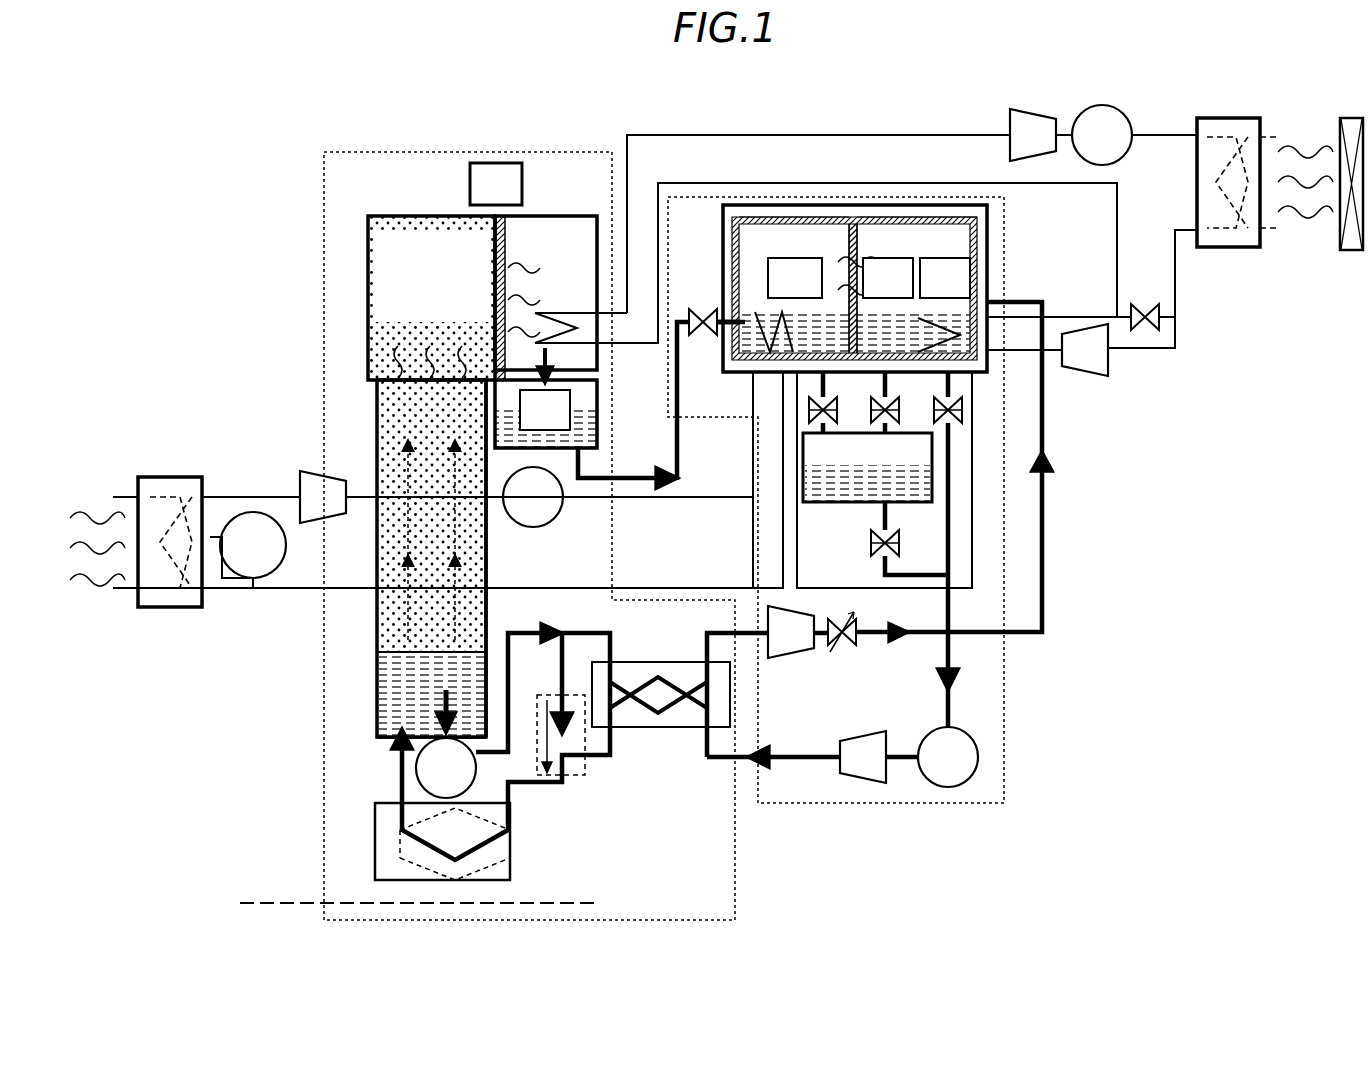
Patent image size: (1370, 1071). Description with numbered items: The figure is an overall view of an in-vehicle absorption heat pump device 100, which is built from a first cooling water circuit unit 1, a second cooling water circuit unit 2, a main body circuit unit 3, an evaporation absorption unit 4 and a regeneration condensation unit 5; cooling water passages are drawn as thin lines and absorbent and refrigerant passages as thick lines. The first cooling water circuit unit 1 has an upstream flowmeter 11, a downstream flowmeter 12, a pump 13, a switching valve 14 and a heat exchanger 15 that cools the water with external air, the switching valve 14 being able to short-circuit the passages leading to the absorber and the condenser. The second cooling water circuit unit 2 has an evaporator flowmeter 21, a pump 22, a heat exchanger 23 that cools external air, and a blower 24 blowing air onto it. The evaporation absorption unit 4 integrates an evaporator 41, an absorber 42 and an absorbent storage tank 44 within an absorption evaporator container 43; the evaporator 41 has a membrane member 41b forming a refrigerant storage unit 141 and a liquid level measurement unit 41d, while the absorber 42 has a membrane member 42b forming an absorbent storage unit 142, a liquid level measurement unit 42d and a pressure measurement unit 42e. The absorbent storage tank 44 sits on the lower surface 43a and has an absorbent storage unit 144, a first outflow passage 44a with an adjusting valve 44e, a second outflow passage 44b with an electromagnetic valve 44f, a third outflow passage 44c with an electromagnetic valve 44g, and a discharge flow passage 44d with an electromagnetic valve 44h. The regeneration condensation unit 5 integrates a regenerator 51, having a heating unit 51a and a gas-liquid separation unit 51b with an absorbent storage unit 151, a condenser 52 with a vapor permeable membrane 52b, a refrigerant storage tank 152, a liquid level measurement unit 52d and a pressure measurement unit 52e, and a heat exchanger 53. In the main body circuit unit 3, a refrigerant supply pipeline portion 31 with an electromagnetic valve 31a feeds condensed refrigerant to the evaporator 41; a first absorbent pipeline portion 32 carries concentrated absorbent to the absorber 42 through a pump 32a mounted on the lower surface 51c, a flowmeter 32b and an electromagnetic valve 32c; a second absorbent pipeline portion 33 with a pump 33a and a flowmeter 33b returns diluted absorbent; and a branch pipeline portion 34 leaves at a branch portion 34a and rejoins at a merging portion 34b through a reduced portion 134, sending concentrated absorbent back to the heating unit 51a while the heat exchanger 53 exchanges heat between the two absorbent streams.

The in-vehicle absorption heat pump device 100 is at (1280, 363).
The first cooling water circuit unit 1 is at (903, 133).
The second cooling water circuit unit 2 is at (247, 488).
The main body circuit unit 3 is at (1046, 440).
The evaporation absorption unit 4 is at (890, 195).
The regeneration condensation unit 5 is at (427, 496).
The upstream flowmeter 11 is at (1089, 371).
The downstream flowmeter 12 is at (1028, 110).
The pump 13 is at (1102, 105).
The switching valve 14 is at (1145, 303).
The heat exchanger 15 is at (1226, 118).
The evaporator flowmeter 21 is at (304, 470).
The pump 22 is at (533, 528).
The heat exchanger 23 is at (172, 477).
The blower 24 is at (244, 580).
The refrigerant supply pipeline portion 31 is at (622, 476).
The electromagnetic valve 31a is at (703, 307).
The first absorbent pipeline portion 32 is at (578, 632).
The pump 32a is at (477, 768).
The flowmeter 32b is at (779, 658).
The electromagnetic valve 32c is at (843, 647).
The second absorbent pipeline portion 33 is at (606, 758).
The pump 33a is at (965, 730).
The flowmeter 33b is at (870, 737).
The branch pipeline portion 34 is at (556, 673).
The branch portion 34a is at (553, 630).
The merging portion 34b is at (575, 778).
The evaporator 41 is at (785, 210).
The membrane member 41b is at (769, 216).
The liquid level measurement unit 41d is at (767, 265).
The absorber 42 is at (912, 213).
The membrane member 42b is at (975, 216).
The liquid level measurement unit 42d is at (866, 262).
The pressure measurement unit 42e is at (984, 262).
The absorption evaporator container 43 is at (852, 214).
The lower surface 43a is at (752, 375).
The absorbent storage tank 44 is at (907, 549).
The first outflow passage 44a is at (826, 386).
The second outflow passage 44b is at (888, 386).
The third outflow passage 44c is at (952, 386).
The discharge flow passage 44d is at (889, 518).
The adjusting valve 44e is at (839, 410).
The electromagnetic valve 44f is at (899, 410).
The electromagnetic valve 44g is at (962, 410).
The electromagnetic valve 44h is at (889, 546).
The regenerator 51 is at (379, 558).
The heating unit 51a is at (375, 850).
The gas-liquid separation unit 51b is at (376, 408).
The lower surface 51c is at (377, 740).
The condenser 52 is at (538, 214).
The vapor permeable membrane 52b is at (495, 258).
The liquid level measurement unit 52d is at (565, 440).
The pressure measurement unit 52e is at (478, 162).
The heat exchanger 53 is at (670, 728).
The reduced portion 134 is at (588, 769).
The refrigerant storage unit 141 is at (740, 350).
The absorbent storage unit 142 is at (1104, 377).
The absorbent storage unit 144 is at (808, 503).
The absorbent storage unit 151 is at (390, 665).
The refrigerant storage tank 152 is at (495, 420).